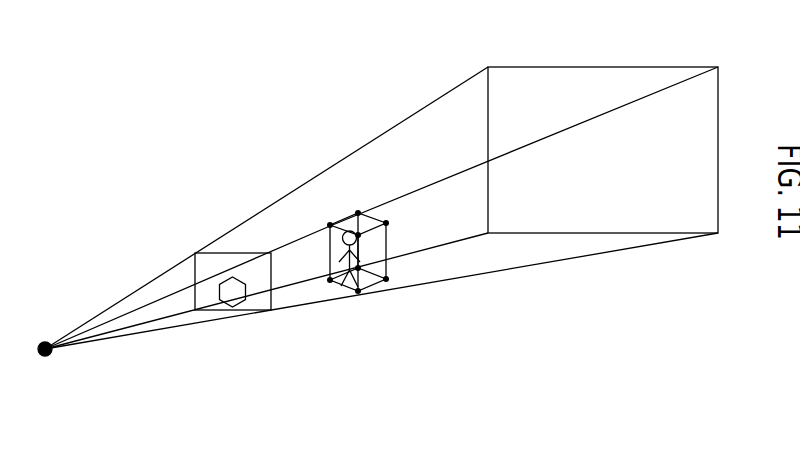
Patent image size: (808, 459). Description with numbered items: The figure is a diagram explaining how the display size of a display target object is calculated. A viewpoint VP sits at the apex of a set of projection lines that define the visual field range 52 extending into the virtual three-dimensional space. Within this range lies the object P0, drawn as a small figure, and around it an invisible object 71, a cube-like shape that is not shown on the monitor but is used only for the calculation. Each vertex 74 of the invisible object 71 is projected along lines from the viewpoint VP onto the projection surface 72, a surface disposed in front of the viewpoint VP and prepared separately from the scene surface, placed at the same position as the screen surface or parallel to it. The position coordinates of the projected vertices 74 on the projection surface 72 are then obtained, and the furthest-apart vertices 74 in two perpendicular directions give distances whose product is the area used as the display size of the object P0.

The visual field range 52 is at (390, 128).
The invisible object 71 is at (370, 255).
The projection surface 72 is at (212, 311).
The vertex 74 is at (358, 210).
The object P0 is at (342, 236).
The viewpoint VP is at (43, 342).